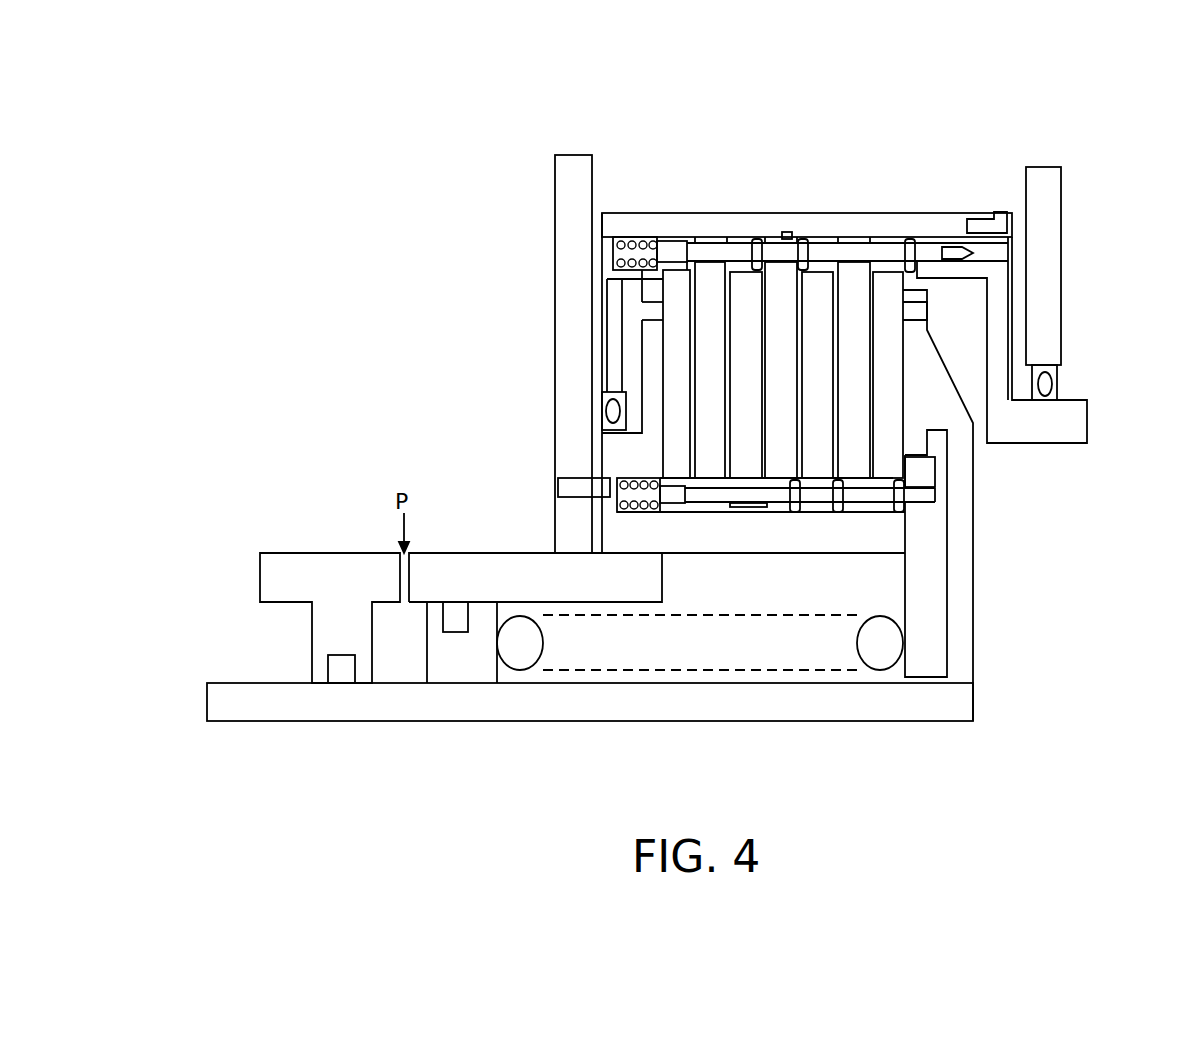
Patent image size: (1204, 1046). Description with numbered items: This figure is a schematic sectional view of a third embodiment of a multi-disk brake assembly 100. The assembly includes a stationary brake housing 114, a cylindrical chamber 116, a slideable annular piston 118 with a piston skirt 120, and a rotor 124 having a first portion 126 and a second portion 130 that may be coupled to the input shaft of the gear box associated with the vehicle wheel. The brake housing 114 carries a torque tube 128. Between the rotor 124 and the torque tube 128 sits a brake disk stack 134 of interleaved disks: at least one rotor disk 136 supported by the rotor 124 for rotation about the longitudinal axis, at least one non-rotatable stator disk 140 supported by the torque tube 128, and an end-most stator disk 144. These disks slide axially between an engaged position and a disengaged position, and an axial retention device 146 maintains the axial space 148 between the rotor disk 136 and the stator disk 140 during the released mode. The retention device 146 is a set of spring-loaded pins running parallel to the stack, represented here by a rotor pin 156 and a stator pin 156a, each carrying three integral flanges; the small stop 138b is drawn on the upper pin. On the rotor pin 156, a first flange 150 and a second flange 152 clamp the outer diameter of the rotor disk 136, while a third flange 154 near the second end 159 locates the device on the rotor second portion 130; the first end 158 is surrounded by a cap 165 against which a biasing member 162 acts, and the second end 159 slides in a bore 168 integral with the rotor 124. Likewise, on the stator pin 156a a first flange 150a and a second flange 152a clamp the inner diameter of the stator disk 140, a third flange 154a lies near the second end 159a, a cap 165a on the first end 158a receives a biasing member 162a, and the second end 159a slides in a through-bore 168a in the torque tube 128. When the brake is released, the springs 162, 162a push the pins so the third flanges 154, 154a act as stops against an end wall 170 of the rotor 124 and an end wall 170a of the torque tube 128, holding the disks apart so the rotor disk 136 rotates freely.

The multi-disk brake assembly 100 is at (368, 127).
The stationary brake housing 114 is at (570, 340).
The cylindrical chamber 116 is at (393, 670).
The slideable annular piston 118 is at (453, 687).
The piston skirt 120 is at (525, 705).
The rotor 124 is at (610, 218).
The first portion 126 is at (607, 375).
The torque tube 128 is at (920, 640).
The second portion 130 is at (1077, 418).
The brake disk stack 134 is at (645, 287).
The rotor disk 136 is at (788, 287).
The stop 138b is at (790, 233).
The stator disk 140 is at (817, 440).
The stator disk 144 is at (676, 437).
The axial retention device 146 is at (826, 233).
The axial space 148 is at (800, 310).
The first flange 150 is at (760, 240).
The first flange 150a is at (792, 508).
The second flange 152 is at (805, 240).
The second flange 152a is at (837, 507).
The third flange 154 is at (913, 233).
The third flange 154a is at (937, 494).
The pin 156 is at (685, 240).
The pin 156a is at (893, 505).
The first end 158 is at (668, 240).
The first end 158a is at (667, 507).
The second end 159 is at (1008, 228).
The second end 159a is at (910, 505).
The biasing member 162 is at (600, 243).
The biasing member 162a is at (618, 503).
The cap 165 is at (615, 263).
The cap 165a is at (645, 472).
The bore 168 is at (975, 262).
The bore 168a is at (918, 495).
The end wall 170 is at (925, 285).
The end wall 170a is at (935, 472).